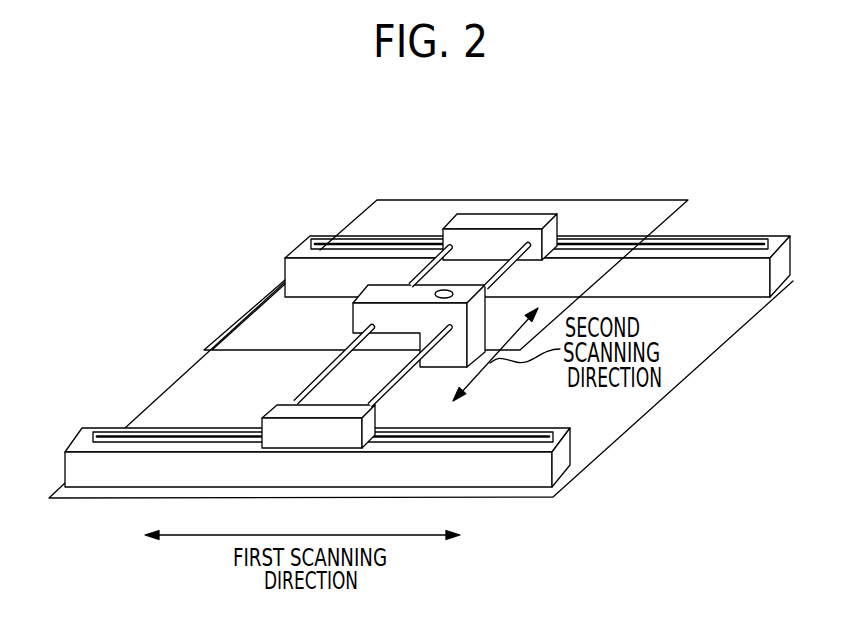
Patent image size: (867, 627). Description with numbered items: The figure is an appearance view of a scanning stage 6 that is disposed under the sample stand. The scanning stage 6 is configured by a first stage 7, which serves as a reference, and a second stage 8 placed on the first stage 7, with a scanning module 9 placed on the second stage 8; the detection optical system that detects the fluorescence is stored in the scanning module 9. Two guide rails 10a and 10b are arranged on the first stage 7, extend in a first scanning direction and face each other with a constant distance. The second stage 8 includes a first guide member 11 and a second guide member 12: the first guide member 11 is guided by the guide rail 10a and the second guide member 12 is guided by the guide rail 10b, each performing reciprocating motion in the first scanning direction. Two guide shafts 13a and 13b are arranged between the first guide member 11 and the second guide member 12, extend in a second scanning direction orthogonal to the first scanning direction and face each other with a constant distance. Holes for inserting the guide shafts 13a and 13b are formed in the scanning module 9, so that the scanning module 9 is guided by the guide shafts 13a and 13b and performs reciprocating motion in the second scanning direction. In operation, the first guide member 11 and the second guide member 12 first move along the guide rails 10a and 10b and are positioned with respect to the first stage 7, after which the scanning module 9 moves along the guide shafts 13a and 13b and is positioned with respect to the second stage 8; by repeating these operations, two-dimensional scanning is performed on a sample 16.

The scanning stage 6 is at (731, 127).
The first stage 7 is at (715, 224).
The second stage 8 is at (590, 206).
The scanning module 9 is at (365, 289).
The guide rail 10a is at (533, 430).
The guide rail 10b is at (762, 236).
The first guide member 11 is at (270, 416).
The second guide member 12 is at (490, 222).
The guide shaft 13a is at (318, 380).
The guide shaft 13b is at (397, 388).
The sample 16 is at (394, 200).